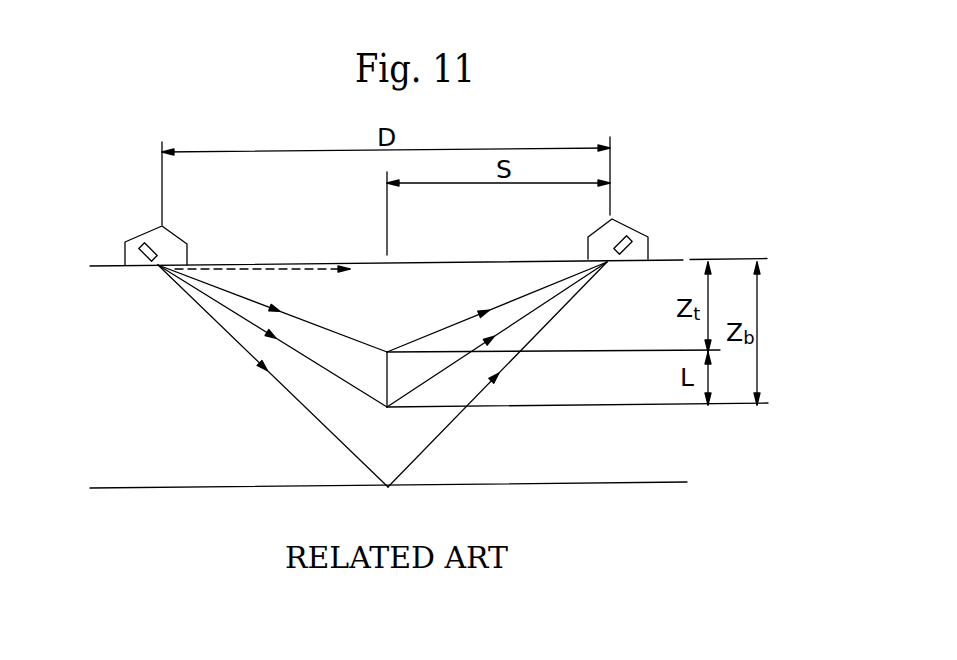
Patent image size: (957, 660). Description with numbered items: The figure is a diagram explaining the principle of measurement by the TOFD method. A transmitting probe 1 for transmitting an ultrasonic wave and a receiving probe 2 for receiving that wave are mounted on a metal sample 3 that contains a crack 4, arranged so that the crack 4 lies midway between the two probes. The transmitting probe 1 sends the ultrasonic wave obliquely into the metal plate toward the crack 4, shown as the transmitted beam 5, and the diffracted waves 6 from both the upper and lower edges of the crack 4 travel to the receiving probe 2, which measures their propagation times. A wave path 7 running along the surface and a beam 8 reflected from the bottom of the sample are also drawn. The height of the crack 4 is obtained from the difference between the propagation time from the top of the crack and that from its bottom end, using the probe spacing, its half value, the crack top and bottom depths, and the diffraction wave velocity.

The transmitting probe 1 is at (180, 237).
The receiving probe 2 is at (630, 228).
The metal sample 3 is at (670, 259).
The crack 4 is at (387, 380).
The transmitted ultrasonic beam 5 is at (323, 423).
The diffracted waves 6 is at (450, 366).
The surface wave 7 is at (273, 267).
The bottom-reflected ultrasonic beam 8 is at (430, 442).